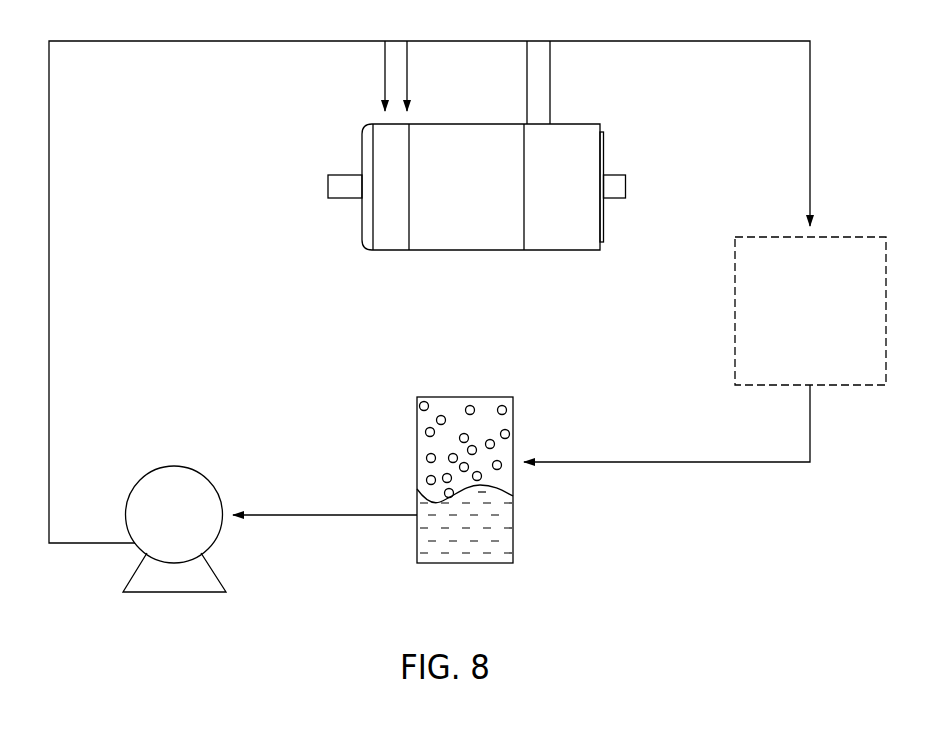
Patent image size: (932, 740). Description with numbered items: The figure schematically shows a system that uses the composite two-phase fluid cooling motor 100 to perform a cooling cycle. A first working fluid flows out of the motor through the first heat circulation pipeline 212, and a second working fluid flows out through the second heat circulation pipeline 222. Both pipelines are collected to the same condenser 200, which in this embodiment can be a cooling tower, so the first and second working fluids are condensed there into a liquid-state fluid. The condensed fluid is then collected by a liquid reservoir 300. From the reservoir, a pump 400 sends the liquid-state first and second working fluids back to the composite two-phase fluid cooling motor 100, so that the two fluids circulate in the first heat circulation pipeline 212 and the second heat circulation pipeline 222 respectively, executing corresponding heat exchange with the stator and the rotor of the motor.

The composite two-phase fluid cooling motor 100 is at (342, 156).
The second heat circulation pipeline 222 is at (527, 92).
The first heat circulation pipeline 212 is at (549, 98).
The condenser 200 is at (863, 385).
The liquid reservoir 300 is at (497, 563).
The pump 400 is at (230, 543).